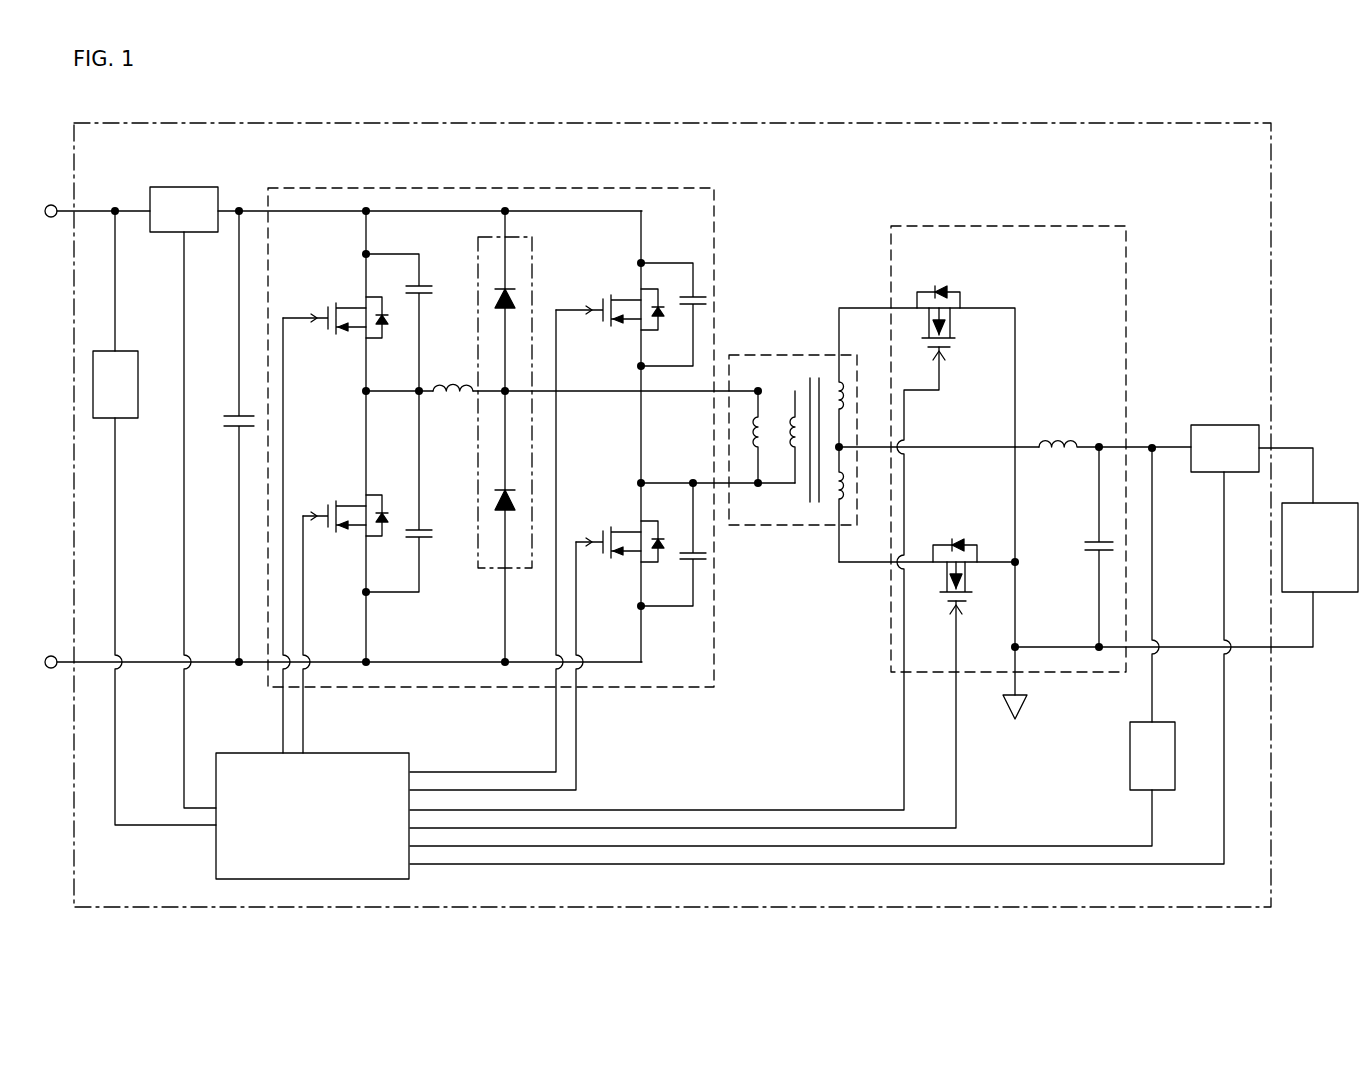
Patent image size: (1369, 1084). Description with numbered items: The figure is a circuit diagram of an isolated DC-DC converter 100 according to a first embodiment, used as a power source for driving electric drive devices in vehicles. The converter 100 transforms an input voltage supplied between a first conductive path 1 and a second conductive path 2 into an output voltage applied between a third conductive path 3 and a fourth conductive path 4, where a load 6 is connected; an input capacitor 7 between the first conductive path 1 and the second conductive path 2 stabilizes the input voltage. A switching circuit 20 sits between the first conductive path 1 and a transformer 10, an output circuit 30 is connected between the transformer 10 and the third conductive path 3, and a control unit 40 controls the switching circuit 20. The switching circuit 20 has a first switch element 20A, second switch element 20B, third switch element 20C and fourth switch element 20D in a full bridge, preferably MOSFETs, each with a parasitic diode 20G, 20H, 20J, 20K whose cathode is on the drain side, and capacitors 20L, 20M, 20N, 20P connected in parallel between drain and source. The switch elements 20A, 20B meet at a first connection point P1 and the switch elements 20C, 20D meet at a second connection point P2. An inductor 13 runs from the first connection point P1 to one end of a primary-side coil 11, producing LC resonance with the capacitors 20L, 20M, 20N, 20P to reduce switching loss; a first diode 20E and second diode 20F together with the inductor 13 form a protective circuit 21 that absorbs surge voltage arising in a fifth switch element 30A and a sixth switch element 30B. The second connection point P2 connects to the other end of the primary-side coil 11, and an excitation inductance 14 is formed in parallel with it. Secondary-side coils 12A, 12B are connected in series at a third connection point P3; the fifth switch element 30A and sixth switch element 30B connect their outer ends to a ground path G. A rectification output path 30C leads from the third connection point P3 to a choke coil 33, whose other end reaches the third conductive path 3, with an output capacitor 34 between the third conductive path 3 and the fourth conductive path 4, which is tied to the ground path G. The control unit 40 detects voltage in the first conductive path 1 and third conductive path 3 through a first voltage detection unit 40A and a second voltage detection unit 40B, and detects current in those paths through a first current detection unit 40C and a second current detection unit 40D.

The isolated DC-DC converter 100 is at (1178, 122).
The first conductive path 1 is at (131, 209).
The second conductive path 2 is at (150, 668).
The third conductive path 3 is at (1170, 447).
The fourth conductive path 4 is at (1190, 655).
The load 6 is at (1325, 503).
The input capacitor 7 is at (226, 430).
The transformer 10 is at (778, 353).
The primary-side coil 11 is at (795, 465).
The secondary-side coil 12A is at (843, 383).
The secondary-side coil 12B is at (843, 500).
The inductor 13 is at (455, 401).
The excitation inductance 14 is at (757, 465).
The switching circuit 20 is at (480, 186).
The first switch element 20A is at (346, 305).
The second switch element 20B is at (358, 503).
The third switch element 20C is at (630, 300).
The fourth switch element 20D is at (633, 530).
The first diode 20E is at (515, 290).
The second diode 20F is at (515, 490).
The parasitic diode 20G is at (384, 334).
The parasitic diode 20H is at (384, 532).
The parasitic diode 20J is at (660, 318).
The parasitic diode 20K is at (660, 550).
The capacitor 20L is at (427, 283).
The capacitor 20M is at (425, 540).
The capacitor 20N is at (702, 290).
The capacitor 20P is at (700, 560).
The protective circuit 21 is at (535, 358).
The output circuit 30 is at (1040, 225).
The fifth switch element 30A is at (952, 320).
The sixth switch element 30B is at (968, 575).
The rectification output path 30C is at (992, 475).
The choke coil 33 is at (1058, 462).
The output capacitor 34 is at (1097, 553).
The control unit 40 is at (322, 880).
The first voltage detection unit 40A is at (130, 419).
The second voltage detection unit 40B is at (1131, 760).
The first current detection unit 40C is at (183, 187).
The second current detection unit 40D is at (1240, 425).
The first connection point P1 is at (362, 388).
The second connection point P2 is at (645, 482).
The third connection point P3 is at (843, 444).
The ground path G is at (1018, 685).